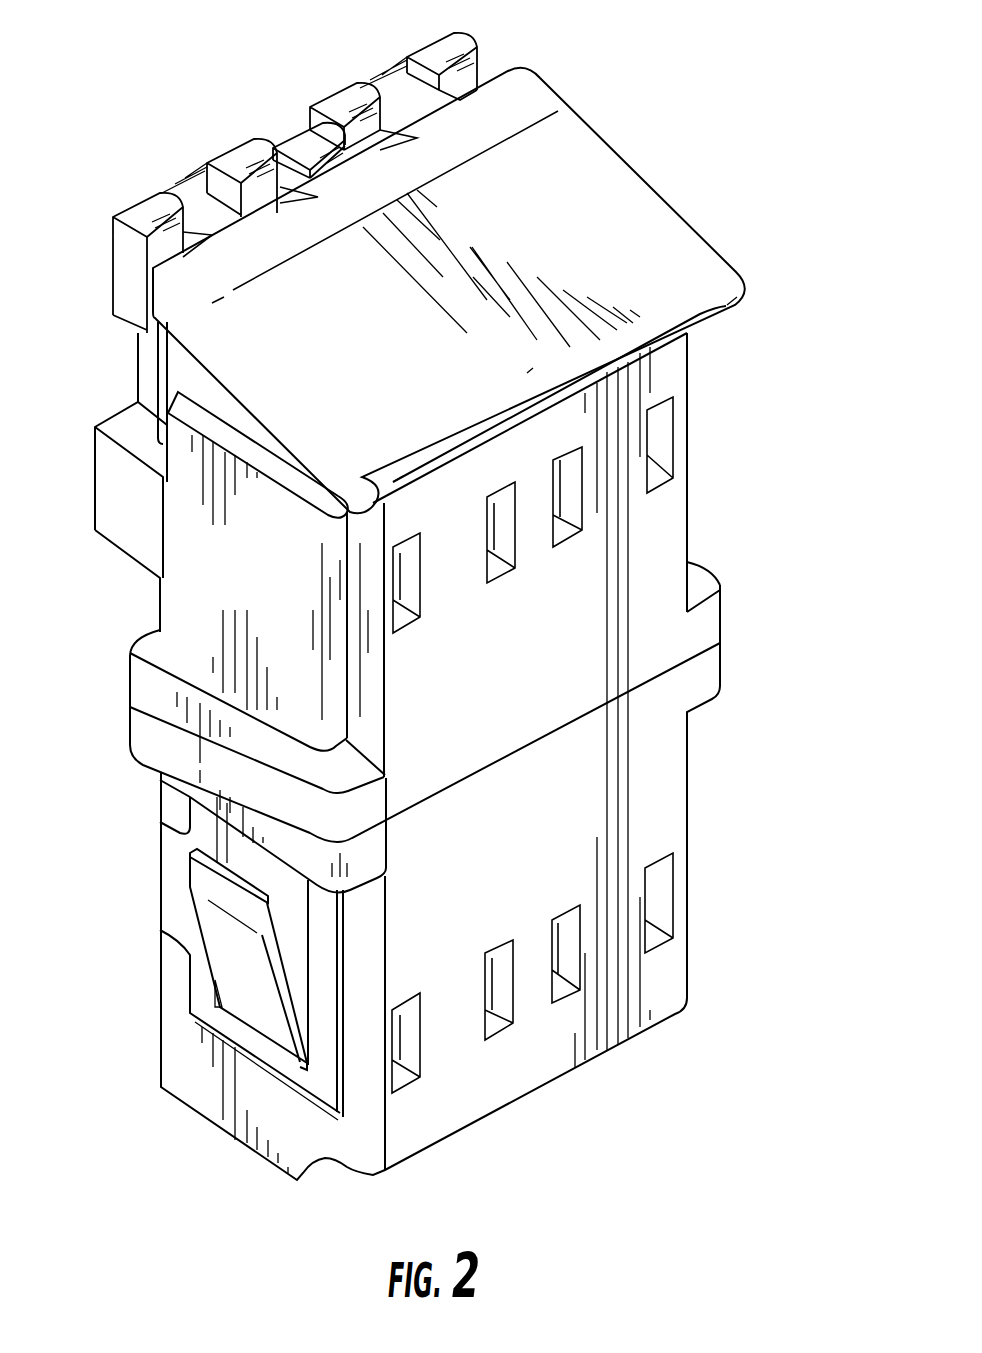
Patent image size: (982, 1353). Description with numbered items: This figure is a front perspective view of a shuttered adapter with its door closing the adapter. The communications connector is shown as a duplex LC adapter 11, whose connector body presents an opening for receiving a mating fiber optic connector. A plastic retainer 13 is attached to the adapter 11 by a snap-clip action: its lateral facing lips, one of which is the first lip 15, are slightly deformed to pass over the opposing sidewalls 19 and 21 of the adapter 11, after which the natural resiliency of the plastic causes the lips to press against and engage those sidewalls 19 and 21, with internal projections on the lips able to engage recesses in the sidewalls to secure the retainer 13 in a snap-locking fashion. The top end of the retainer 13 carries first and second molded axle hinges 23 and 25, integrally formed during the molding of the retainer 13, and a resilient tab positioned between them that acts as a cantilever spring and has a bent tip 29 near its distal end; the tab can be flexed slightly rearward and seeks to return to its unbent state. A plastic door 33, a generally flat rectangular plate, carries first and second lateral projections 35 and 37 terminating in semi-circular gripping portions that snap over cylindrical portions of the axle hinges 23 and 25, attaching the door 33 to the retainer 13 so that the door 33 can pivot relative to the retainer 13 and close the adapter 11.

The duplex LC adapter 11 is at (776, 412).
The plastic retainer 13 is at (137, 503).
The first lateral facing lip 15 is at (253, 573).
The sidewall 19 is at (187, 373).
The sidewall 21 is at (690, 431).
The first molded axle hinge 23 is at (103, 203).
The second molded axle hinge 25 is at (437, 27).
The bent tip 29 is at (300, 125).
The plastic door 33 is at (497, 240).
The first lateral projection 35 is at (223, 217).
The second lateral projection 37 is at (420, 112).